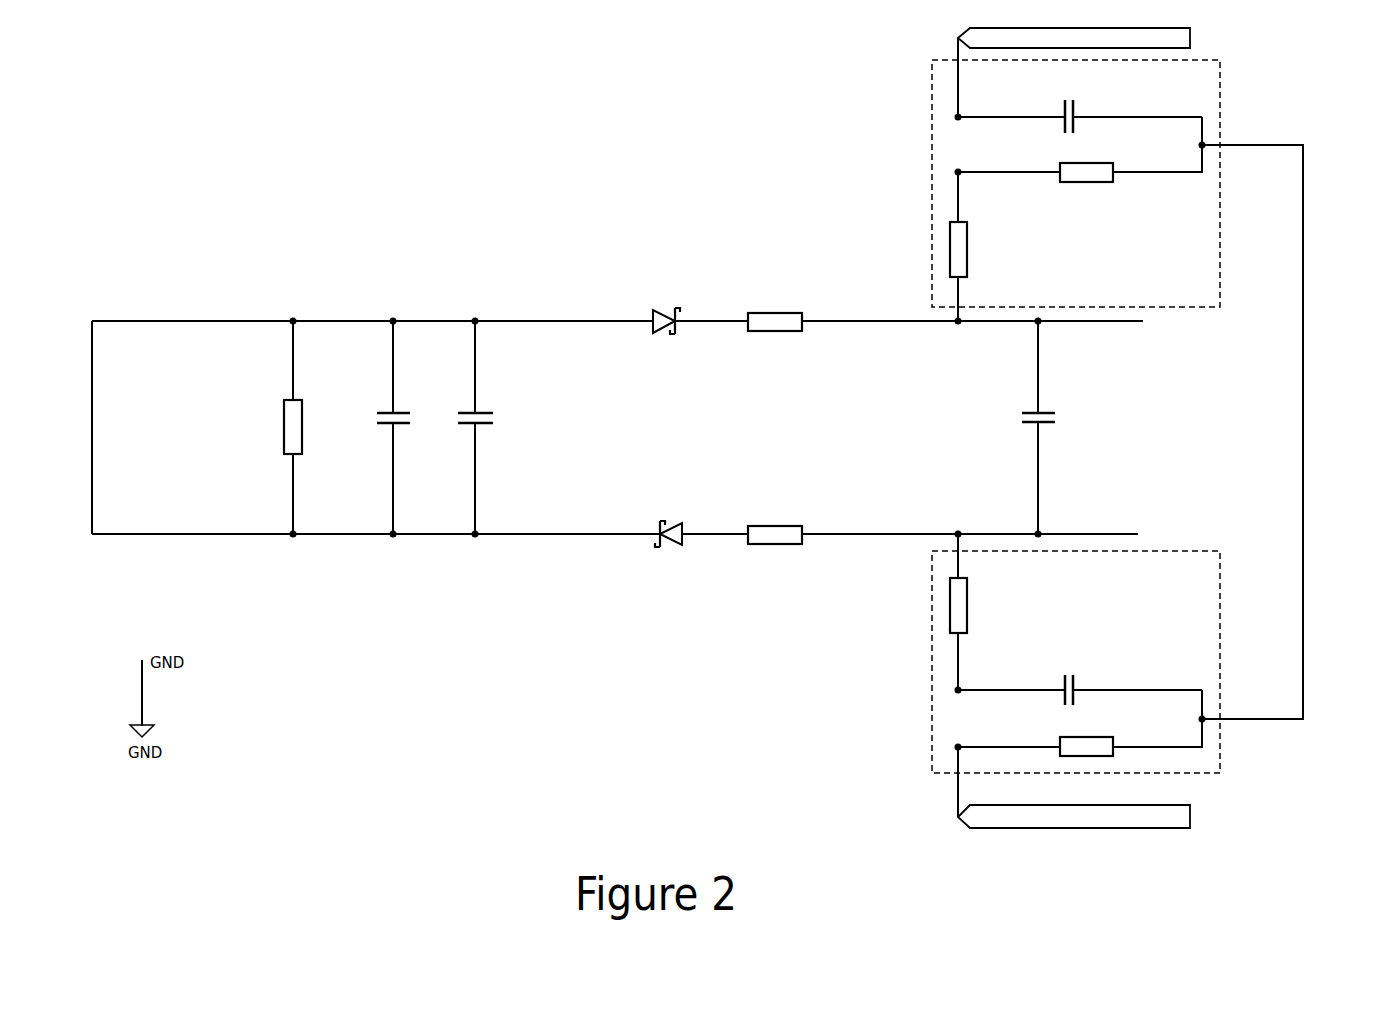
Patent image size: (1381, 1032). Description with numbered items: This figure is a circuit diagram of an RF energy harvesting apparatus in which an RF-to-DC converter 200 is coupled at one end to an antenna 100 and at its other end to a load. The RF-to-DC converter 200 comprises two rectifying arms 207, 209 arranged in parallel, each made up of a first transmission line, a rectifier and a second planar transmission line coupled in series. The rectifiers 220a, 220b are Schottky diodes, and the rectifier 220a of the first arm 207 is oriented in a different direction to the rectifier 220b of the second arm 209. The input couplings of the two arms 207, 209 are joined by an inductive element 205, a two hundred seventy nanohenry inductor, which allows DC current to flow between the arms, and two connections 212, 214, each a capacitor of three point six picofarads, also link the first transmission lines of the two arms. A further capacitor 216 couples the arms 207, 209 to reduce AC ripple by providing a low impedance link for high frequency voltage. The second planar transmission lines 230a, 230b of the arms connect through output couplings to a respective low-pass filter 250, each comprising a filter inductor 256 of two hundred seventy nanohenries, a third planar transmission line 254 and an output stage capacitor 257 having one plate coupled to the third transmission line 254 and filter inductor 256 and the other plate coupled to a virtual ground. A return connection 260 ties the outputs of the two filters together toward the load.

The antenna 100 is at (122, 320).
The RF-to-DC converter 200 is at (352, 148).
The inductive element 205 is at (284, 438).
The first rectifying arm 207 is at (525, 320).
The second rectifying arm 209 is at (555, 540).
The connection 212 is at (385, 411).
The connection 214 is at (465, 411).
The capacitor 216 is at (1045, 412).
The rectifier 220a is at (662, 310).
The rectifier 220b is at (675, 545).
The second planar transmission line 230a is at (775, 310).
The second planar transmission line 230b is at (778, 548).
The low-pass filter 250 is at (1220, 112).
The third planar transmission line 254 is at (960, 302).
The filter inductor 256 is at (950, 250).
The output stage capacitor 257 is at (1077, 112).
The RECT_BACK feedback line 260 is at (1303, 312).